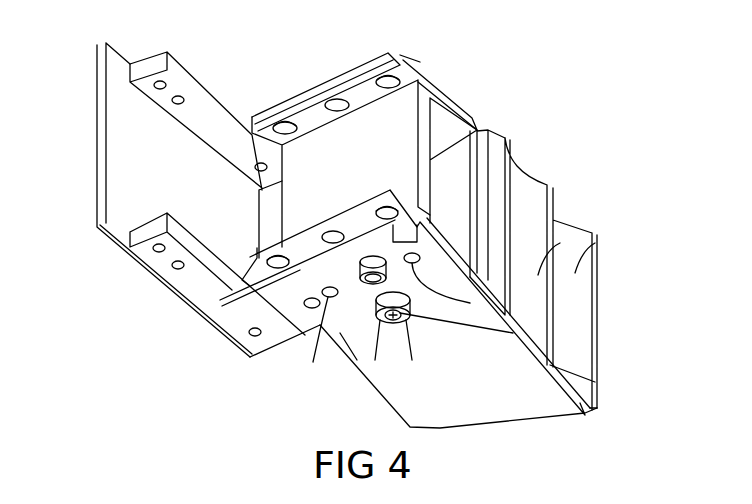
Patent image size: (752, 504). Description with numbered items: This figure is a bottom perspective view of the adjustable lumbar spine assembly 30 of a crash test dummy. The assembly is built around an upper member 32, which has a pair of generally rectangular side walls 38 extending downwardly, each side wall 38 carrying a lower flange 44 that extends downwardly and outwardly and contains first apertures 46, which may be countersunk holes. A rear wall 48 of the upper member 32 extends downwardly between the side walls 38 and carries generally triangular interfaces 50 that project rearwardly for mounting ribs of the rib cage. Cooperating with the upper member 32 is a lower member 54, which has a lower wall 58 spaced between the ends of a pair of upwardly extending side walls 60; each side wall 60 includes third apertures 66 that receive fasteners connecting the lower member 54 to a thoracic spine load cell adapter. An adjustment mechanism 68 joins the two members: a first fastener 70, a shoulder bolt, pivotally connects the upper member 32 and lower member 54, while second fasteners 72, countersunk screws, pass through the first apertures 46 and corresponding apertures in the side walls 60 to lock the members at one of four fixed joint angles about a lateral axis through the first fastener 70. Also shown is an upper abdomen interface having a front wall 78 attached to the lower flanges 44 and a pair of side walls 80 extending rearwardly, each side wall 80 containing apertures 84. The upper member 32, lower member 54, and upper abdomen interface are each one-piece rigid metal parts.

The adjustable lumbar spine assembly 30 is at (498, 74).
The upper member 32 is at (558, 205).
The side walls 38 is at (507, 403).
The lower flange 44 is at (432, 77).
The first apertures 46 is at (312, 308).
The rear wall 48 is at (588, 410).
The interfaces 50 is at (560, 244).
The lower member 54 is at (268, 102).
The lower wall 58 is at (432, 92).
The side walls 60 is at (363, 88).
The third apertures 66 is at (283, 122).
The adjustment mechanism 68 is at (387, 328).
The first fastener 70 is at (400, 325).
The second fasteners 72 is at (366, 288).
The front wall 78 is at (125, 148).
The side walls 80 is at (145, 62).
The apertures 84 is at (157, 88).